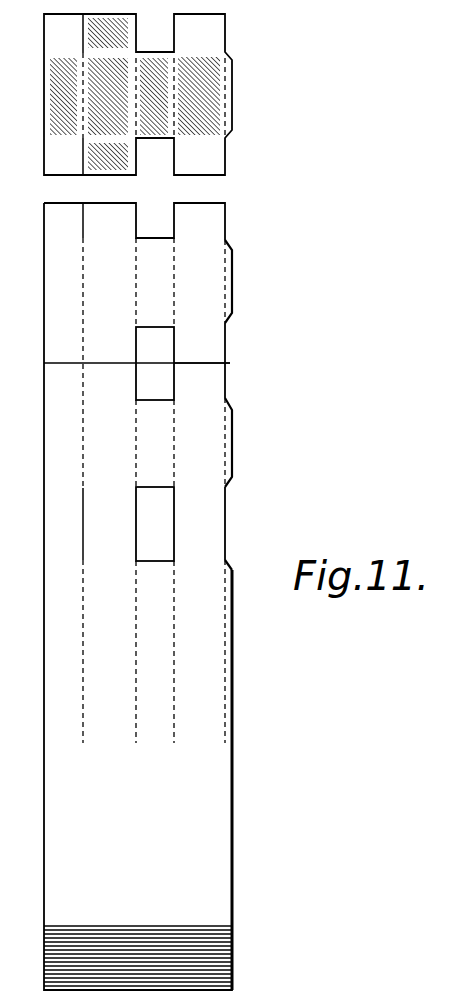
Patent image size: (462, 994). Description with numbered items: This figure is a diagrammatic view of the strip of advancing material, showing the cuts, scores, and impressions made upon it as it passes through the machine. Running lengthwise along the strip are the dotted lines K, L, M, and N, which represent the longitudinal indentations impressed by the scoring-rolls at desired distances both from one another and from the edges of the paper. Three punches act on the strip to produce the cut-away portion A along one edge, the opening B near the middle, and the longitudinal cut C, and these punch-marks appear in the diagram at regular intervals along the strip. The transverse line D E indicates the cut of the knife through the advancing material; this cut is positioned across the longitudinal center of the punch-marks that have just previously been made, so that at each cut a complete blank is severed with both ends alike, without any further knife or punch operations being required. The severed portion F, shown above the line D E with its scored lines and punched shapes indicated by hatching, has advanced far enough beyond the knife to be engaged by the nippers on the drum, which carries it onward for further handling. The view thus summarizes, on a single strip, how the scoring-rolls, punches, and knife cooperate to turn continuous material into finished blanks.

The cut-away portion A is at (144, 596).
The opening B is at (155, 444).
The longitudinal cut C is at (90, 381).
The end of knife-cut line D is at (121, 361).
The end of knife-cut line E is at (209, 356).
The severed portion F is at (148, 292).
The longitudinal indentation line K is at (75, 665).
The longitudinal indentation line L is at (129, 504).
The longitudinal indentation line M is at (163, 504).
The longitudinal indentation line N is at (215, 505).